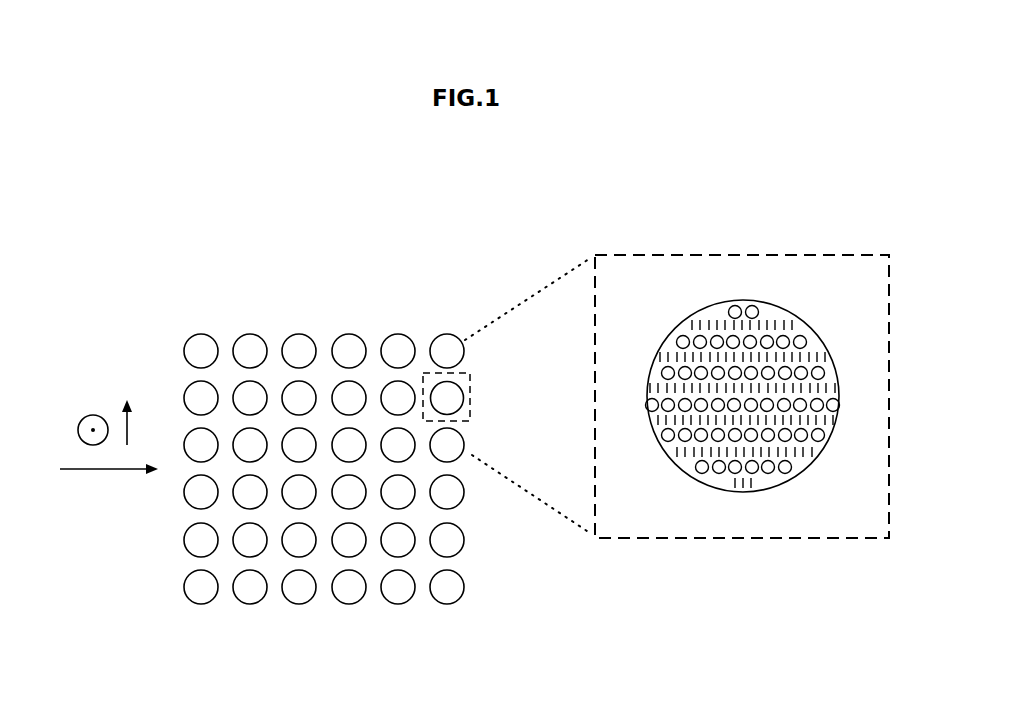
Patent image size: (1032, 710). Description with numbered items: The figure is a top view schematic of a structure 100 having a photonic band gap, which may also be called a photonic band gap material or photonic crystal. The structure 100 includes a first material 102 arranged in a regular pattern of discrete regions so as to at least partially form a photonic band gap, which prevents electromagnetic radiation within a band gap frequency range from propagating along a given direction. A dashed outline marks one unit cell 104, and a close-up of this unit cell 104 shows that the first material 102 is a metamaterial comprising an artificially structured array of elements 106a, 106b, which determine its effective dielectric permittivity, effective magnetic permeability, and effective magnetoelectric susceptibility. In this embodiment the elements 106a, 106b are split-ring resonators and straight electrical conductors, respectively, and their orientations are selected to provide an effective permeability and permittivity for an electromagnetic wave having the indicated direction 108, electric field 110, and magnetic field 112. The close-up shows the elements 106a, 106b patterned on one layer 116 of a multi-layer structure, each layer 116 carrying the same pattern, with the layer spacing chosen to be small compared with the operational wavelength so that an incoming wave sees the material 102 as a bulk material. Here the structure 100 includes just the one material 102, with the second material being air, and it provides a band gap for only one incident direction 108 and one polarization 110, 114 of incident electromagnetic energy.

The structure 100 is at (163, 621).
The first material 102 is at (447, 400).
The unit cell 104 is at (645, 538).
The split-ring resonator 106a is at (793, 465).
The straight electrical conductor 106b is at (750, 482).
The direction 108 is at (98, 469).
The electric field 110 is at (130, 409).
The magnetic field 112 is at (468, 378).
The polarization 114 is at (77, 422).
The layer 116 is at (743, 300).